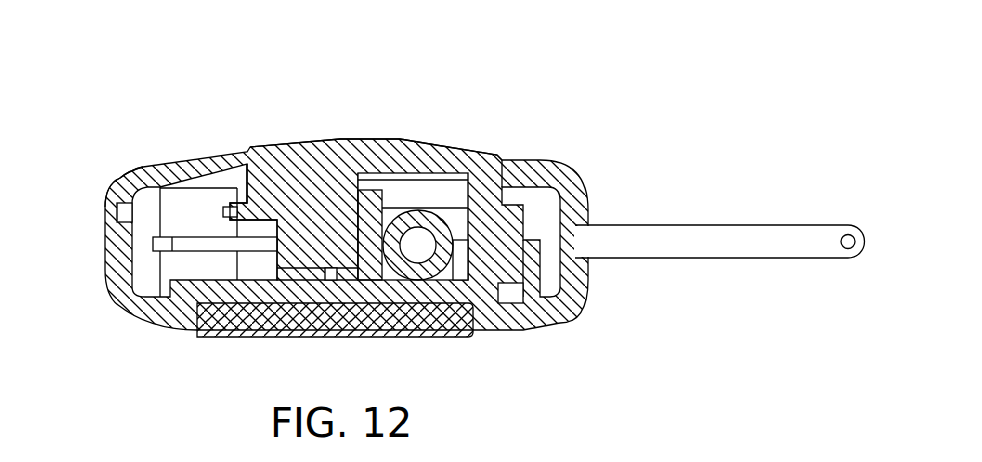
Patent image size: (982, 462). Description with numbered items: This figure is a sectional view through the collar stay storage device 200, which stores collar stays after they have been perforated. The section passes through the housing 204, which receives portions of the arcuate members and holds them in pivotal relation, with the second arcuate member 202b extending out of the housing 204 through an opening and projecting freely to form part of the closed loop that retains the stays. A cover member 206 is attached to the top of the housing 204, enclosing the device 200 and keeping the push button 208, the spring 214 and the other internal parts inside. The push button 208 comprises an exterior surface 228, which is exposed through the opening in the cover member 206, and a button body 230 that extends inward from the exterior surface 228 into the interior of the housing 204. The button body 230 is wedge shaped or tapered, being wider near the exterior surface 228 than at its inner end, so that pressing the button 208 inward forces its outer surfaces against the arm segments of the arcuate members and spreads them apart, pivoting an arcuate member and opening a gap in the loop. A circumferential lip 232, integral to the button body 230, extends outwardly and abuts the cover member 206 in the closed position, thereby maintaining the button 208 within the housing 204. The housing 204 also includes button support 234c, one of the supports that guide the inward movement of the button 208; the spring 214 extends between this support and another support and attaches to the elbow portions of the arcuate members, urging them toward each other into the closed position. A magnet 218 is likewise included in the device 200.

The collar stay storage device 200 is at (233, 88).
The second arcuate member 202b is at (698, 243).
The housing 204 is at (116, 266).
The cover member 206 is at (125, 184).
The push button 208 is at (460, 138).
The spring 214 is at (421, 274).
The magnet 218 is at (196, 333).
The exterior surface 228 is at (370, 138).
The button body 230 is at (331, 195).
The lip 232 is at (222, 206).
The button support 234c is at (413, 239).